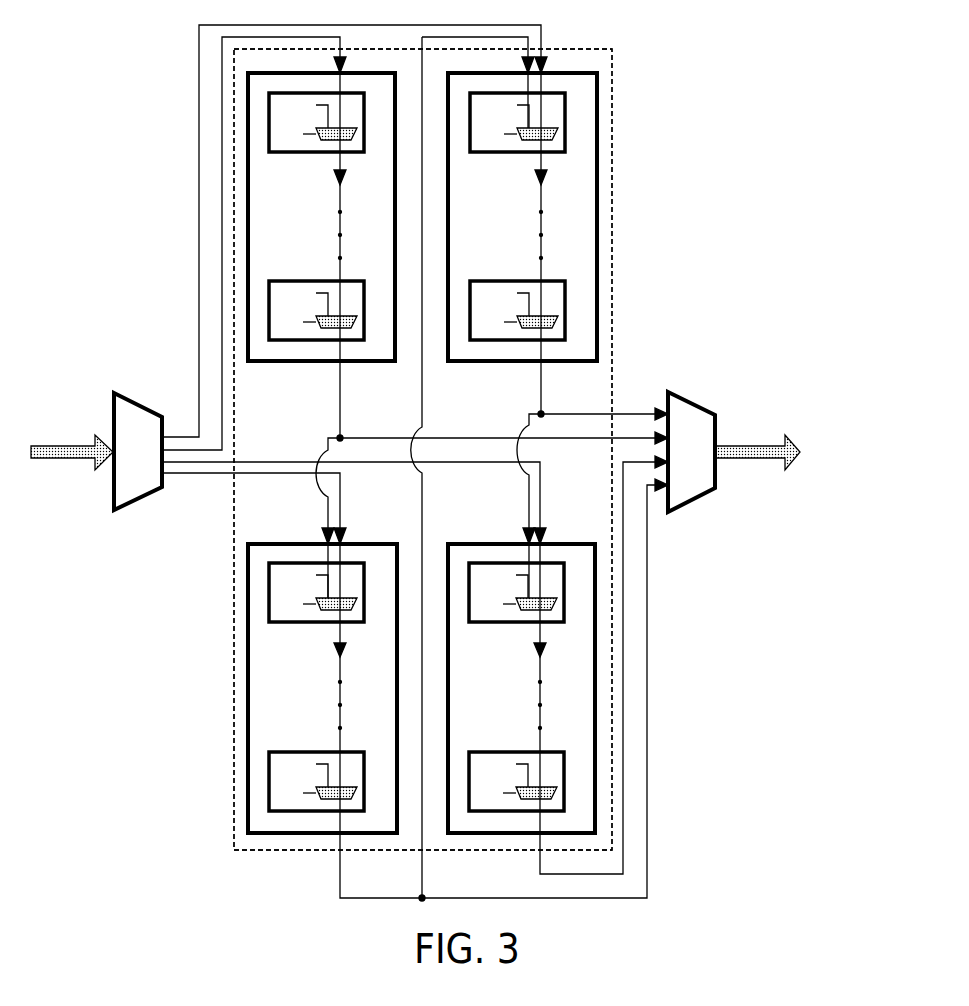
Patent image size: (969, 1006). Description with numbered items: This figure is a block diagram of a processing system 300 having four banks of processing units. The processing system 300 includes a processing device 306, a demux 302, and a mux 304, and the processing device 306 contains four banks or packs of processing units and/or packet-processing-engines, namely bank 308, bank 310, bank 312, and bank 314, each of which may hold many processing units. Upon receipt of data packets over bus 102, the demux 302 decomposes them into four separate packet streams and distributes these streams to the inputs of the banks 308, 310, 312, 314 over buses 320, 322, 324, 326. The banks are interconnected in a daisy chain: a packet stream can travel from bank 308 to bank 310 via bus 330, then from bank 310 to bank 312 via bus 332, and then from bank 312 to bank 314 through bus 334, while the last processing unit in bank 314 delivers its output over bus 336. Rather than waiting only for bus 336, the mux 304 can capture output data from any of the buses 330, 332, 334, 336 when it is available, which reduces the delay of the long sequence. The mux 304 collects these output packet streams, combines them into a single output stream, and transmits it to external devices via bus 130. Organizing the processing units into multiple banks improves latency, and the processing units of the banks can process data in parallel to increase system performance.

The processing system 300 is at (784, 73).
The bus 102 is at (60, 452).
The bus 130 is at (773, 457).
The demux 302 is at (135, 402).
The mux 304 is at (692, 433).
The processing device 306 is at (612, 240).
The bank 308 is at (247, 191).
The bank 310 is at (248, 650).
The bank 312 is at (597, 166).
The bank 314 is at (595, 668).
The bus 320 is at (198, 202).
The bus 322 is at (222, 319).
The bus 324 is at (223, 472).
The bus 326 is at (304, 460).
The bus 330 is at (340, 410).
The bus 332 is at (428, 526).
The bus 334 is at (540, 403).
The bus 336 is at (623, 800).